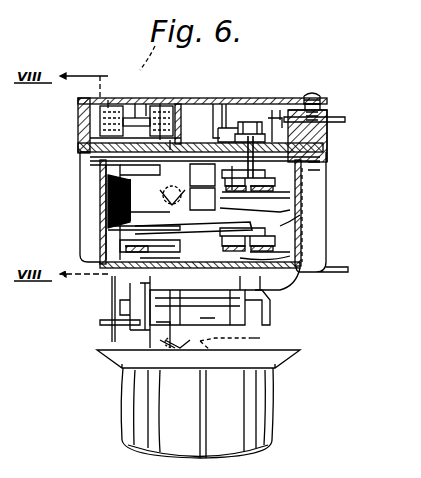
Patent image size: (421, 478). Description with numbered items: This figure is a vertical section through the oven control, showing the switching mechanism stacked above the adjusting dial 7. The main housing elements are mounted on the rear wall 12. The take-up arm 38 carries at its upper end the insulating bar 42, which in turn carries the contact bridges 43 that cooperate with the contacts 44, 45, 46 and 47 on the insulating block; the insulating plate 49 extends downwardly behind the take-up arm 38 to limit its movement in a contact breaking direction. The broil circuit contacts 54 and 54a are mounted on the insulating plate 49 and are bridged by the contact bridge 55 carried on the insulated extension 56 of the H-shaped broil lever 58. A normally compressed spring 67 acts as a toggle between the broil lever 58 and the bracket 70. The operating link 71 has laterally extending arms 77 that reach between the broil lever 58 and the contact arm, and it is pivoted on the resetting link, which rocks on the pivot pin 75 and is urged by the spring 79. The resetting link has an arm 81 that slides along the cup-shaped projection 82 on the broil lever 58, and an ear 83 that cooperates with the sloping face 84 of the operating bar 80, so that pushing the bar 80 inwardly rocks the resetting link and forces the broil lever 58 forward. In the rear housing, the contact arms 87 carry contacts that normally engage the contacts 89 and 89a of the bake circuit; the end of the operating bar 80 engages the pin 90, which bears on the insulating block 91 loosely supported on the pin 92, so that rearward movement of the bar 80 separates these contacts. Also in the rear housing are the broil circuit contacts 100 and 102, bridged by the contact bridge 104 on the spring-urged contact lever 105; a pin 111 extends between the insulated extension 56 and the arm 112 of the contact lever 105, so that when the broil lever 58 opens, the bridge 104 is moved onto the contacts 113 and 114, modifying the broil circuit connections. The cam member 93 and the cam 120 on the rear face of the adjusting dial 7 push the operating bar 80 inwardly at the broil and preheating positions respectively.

The adjusting dial 7 is at (263, 398).
The rear wall 12 is at (327, 162).
The take-up arm 38 is at (262, 272).
The insulating bar 42 is at (215, 224).
The contact bridges 43 is at (311, 215).
The contact 44 is at (112, 290).
The contact 45 is at (130, 308).
The contact 46 is at (290, 282).
The contact 47 is at (300, 253).
The insulating plate 49 is at (340, 230).
The contact 54 is at (290, 210).
The contact 54a is at (341, 230).
The contact bridge 55 is at (290, 194).
The insulated extension 56 is at (250, 177).
The broil lever 58 is at (202, 175).
The spring 67 is at (202, 199).
The bracket 70 is at (235, 140).
The operating link 71 is at (116, 191).
The pivot pin 75 is at (115, 177).
The arms 77 is at (163, 200).
The spring 79 is at (108, 200).
The operating bar 80 is at (120, 244).
The arm 81 is at (172, 140).
The cup-shaped projection 82 is at (160, 104).
The ear 83 is at (108, 213).
The sloping face 84 is at (108, 226).
The contact arms 87 is at (100, 128).
The contact 89 is at (108, 96).
The contact 89a is at (152, 46).
The pin 90 is at (110, 170).
The insulating block 91 is at (147, 104).
The pin 92 is at (135, 104).
The cam member 93 is at (170, 312).
The contact 100 is at (327, 140).
The contact 102 is at (226, 110).
The contact bridge 104 is at (280, 112).
The contact lever 105 is at (280, 100).
The pin 111 is at (310, 172).
The arm 112 is at (270, 118).
The contact 113 is at (213, 118).
The contact 114 is at (340, 117).
The cam 120 is at (250, 344).